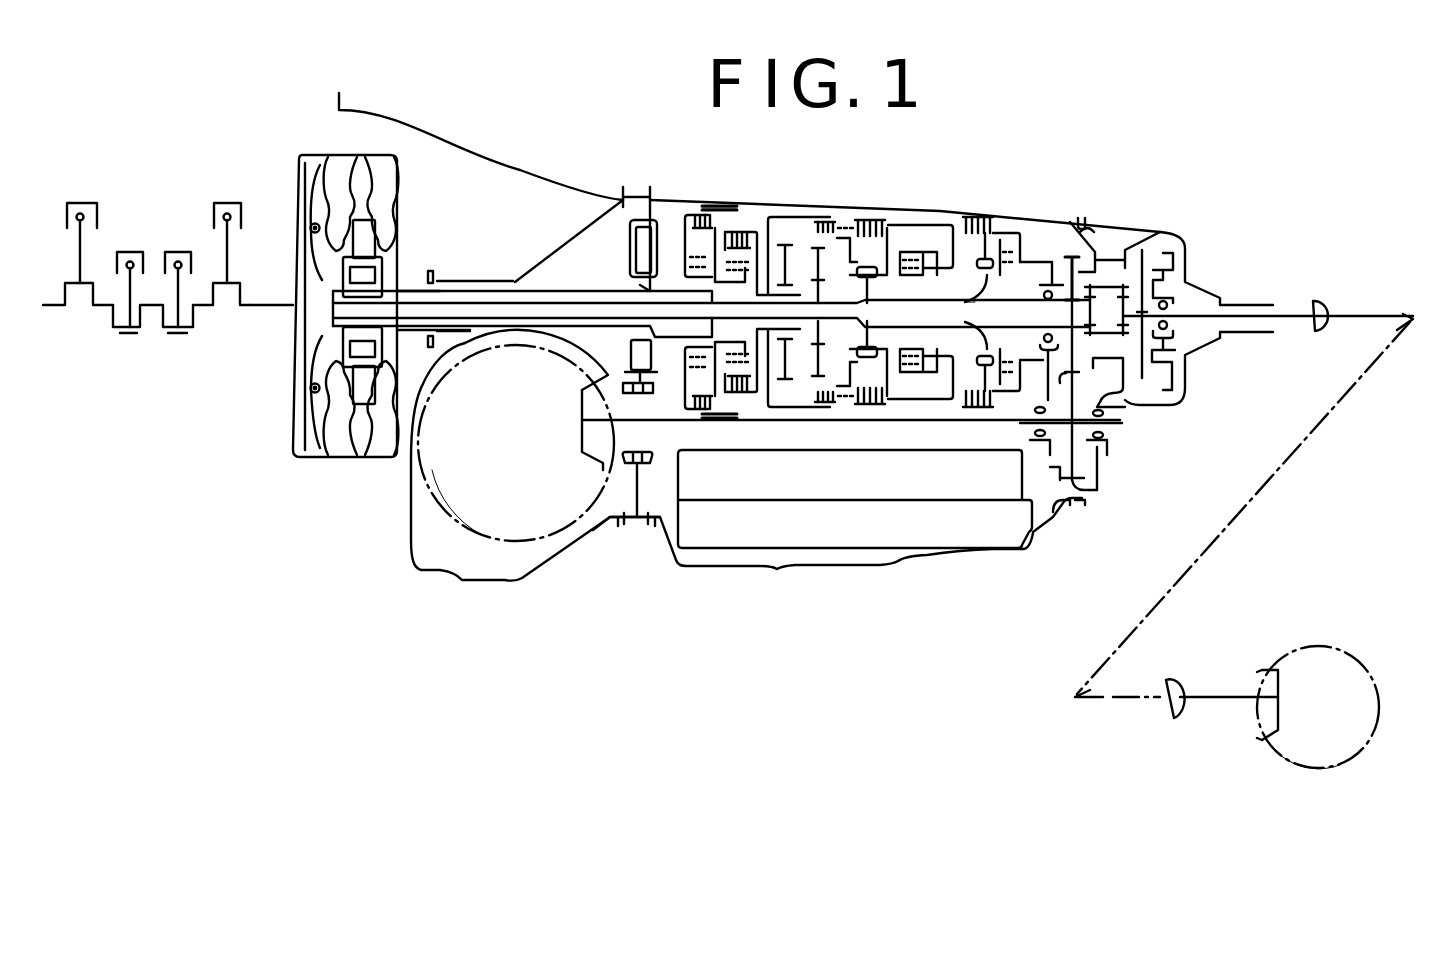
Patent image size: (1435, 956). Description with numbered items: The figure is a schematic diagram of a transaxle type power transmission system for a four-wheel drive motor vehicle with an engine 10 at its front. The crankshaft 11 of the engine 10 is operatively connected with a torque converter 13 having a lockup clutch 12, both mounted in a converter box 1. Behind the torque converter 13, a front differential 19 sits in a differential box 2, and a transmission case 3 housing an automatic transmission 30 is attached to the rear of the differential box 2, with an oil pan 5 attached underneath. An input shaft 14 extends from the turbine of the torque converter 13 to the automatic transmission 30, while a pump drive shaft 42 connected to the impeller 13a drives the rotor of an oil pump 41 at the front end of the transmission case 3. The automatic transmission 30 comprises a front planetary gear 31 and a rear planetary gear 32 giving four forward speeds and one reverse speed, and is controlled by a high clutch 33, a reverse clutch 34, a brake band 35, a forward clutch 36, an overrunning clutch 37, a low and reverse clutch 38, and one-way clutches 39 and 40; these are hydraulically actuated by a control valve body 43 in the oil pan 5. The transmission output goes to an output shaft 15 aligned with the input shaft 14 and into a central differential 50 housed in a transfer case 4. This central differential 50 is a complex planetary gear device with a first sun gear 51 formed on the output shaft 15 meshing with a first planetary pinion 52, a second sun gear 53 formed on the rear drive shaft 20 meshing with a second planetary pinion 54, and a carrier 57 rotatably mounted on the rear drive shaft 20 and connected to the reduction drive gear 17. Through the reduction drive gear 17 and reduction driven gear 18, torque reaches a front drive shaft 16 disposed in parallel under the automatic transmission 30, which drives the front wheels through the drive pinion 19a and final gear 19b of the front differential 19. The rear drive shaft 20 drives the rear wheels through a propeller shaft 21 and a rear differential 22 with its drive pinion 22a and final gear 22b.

The converter box 1 is at (456, 150).
The differential box 2 is at (541, 563).
The transmission case 3 is at (667, 198).
The transfer case 4 is at (1090, 220).
The oil pan 5 is at (925, 562).
The engine 10 is at (172, 228).
The crankshaft 11 is at (259, 309).
The lockup clutch 12 is at (318, 200).
The torque converter 13 is at (398, 188).
The impeller 13a is at (395, 255).
The input shaft 14 is at (454, 305).
The output shaft 15 is at (960, 302).
The front drive shaft 16 is at (900, 423).
The reduction drive gear 17 is at (1073, 258).
The reduction driven gear 18 is at (1097, 488).
The front differential 19 is at (573, 530).
The drive pinion 19a is at (601, 460).
The final gear 19b is at (480, 538).
The rear drive shaft 20 is at (1249, 314).
The propeller shaft 21 is at (1389, 314).
The rear differential 22 is at (1340, 651).
The drive pinion 22a is at (1270, 668).
The final gear 22b is at (1346, 756).
The automatic transmission 30 is at (876, 194).
The front planetary gear 31 is at (798, 341).
The rear planetary gear 32 is at (812, 375).
The high clutch 33 is at (753, 232).
The reverse clutch 34 is at (718, 205).
The brake band 35 is at (706, 205).
The forward clutch 36 is at (832, 217).
The overrunning clutch 37 is at (877, 216).
The low and reverse clutch 38 is at (982, 217).
The one-way clutch 39 is at (947, 299).
The one-way clutch 40 is at (866, 298).
The oil pump 41 is at (630, 258).
The pump drive shaft 42 is at (513, 282).
The control valve body 43 is at (832, 535).
The central differential 50 is at (1117, 240).
The first sun gear 51 is at (1076, 380).
The first planetary pinion 52 is at (1080, 233).
The second sun gear 53 is at (1090, 315).
The second planetary pinion 54 is at (1160, 232).
The carrier 57 is at (1152, 272).